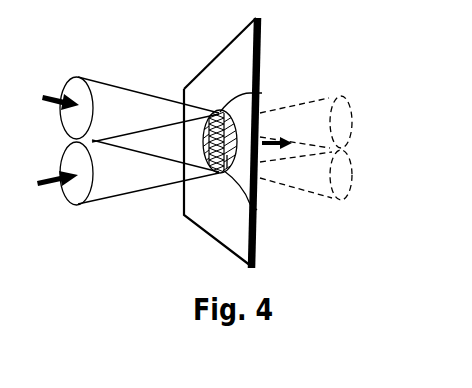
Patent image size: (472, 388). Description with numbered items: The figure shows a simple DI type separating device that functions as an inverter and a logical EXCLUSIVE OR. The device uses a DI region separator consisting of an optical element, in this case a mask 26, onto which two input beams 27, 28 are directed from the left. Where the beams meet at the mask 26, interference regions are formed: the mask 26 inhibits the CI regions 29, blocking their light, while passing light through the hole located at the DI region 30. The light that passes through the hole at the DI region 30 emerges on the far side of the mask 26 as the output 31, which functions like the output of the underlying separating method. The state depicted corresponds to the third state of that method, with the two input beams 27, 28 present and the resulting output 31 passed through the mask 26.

The mask 26 is at (215, 68).
The input beam 27 is at (123, 124).
The input beam 28 is at (120, 164).
The CI regions 29 is at (257, 210).
The DI region 30 is at (262, 93).
The output 31 is at (306, 148).